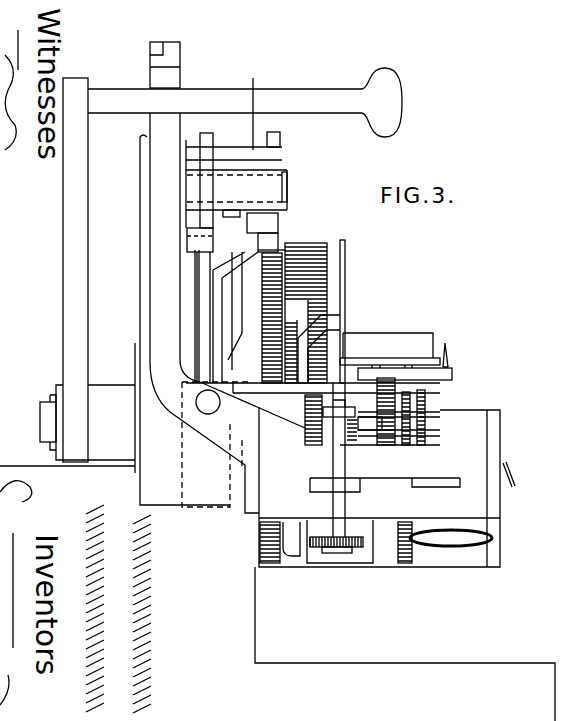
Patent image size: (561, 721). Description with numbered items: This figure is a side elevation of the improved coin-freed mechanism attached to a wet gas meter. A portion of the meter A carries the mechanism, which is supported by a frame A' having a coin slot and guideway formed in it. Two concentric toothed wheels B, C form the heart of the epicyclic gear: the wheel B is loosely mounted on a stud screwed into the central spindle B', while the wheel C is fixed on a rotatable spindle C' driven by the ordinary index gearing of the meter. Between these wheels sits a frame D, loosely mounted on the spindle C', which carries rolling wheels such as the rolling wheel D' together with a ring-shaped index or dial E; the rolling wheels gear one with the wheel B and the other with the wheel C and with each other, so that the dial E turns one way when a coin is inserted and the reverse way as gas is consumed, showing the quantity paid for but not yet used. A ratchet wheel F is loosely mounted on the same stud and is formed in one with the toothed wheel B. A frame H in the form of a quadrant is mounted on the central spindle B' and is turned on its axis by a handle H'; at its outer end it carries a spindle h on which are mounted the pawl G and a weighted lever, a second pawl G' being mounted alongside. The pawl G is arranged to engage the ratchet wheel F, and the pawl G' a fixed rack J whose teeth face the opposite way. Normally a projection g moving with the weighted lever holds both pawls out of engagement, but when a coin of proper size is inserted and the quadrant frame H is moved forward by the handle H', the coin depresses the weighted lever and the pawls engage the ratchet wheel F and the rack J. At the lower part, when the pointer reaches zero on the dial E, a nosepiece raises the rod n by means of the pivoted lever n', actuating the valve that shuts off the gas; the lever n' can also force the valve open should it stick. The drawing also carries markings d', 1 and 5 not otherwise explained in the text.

The portion of a meter A is at (378, 564).
The frame A' is at (161, 272).
The toothed wheel B is at (313, 414).
The spindle B' is at (67, 408).
The toothed wheel C is at (335, 344).
The rotatable spindle C' is at (390, 425).
The frame D is at (342, 313).
The rolling wheel D' is at (286, 302).
The index or dial E is at (346, 263).
The ratchet wheel F is at (282, 238).
The pawl G is at (243, 145).
The second pawl G' is at (211, 253).
The frame in the form of a quadrant H is at (208, 277).
The handle H' is at (86, 270).
The fixed rack J is at (218, 262).
The pin d' is at (217, 444).
The projection g is at (245, 103).
The spindle h is at (287, 180).
The rod n is at (376, 460).
The lever n' is at (373, 361).
The scale mark 1 is at (395, 357).
The scale mark 5 is at (350, 357).